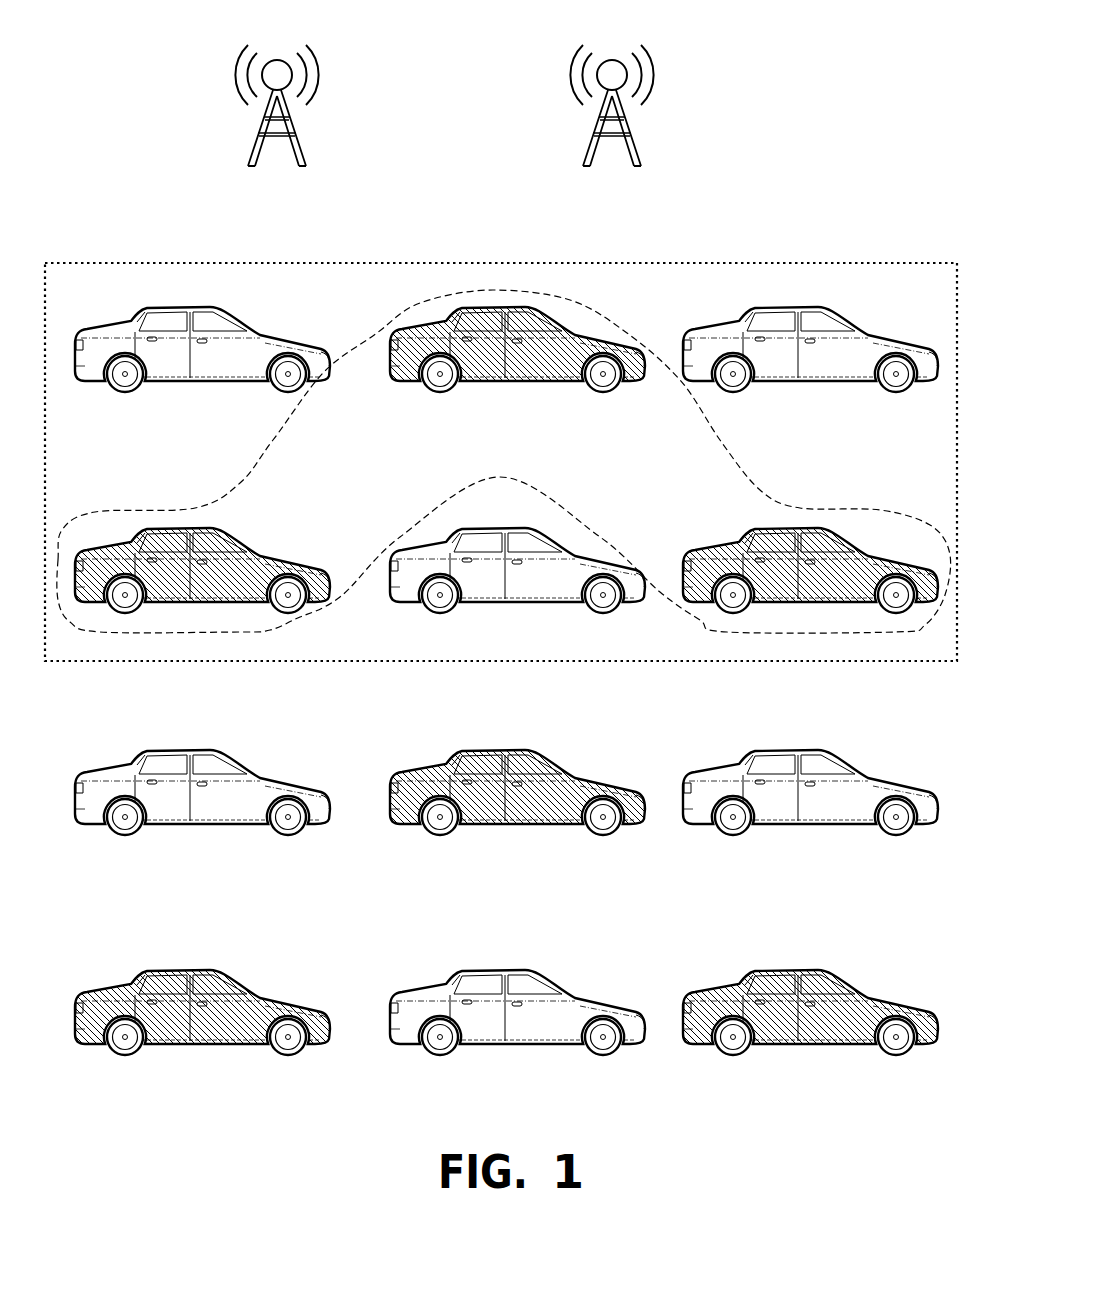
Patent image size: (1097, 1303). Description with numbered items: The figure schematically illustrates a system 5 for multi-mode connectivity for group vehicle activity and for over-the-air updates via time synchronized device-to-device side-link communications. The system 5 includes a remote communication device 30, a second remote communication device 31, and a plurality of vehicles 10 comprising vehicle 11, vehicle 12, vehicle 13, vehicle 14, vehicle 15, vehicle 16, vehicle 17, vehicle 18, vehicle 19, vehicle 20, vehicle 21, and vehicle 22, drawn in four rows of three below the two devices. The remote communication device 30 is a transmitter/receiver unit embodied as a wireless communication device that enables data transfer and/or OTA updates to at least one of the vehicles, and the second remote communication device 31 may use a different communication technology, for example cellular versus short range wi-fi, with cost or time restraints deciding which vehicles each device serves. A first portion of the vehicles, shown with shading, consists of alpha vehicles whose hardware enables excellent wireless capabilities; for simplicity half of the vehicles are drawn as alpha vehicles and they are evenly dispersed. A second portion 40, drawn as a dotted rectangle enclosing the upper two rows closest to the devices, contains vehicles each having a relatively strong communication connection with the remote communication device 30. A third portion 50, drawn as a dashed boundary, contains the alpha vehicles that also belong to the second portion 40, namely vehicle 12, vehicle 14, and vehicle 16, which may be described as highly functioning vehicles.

The system 5 is at (847, 66).
The plurality of vehicles 10 is at (914, 180).
The vehicle 11 is at (165, 307).
The vehicle 12 is at (581, 335).
The vehicle 13 is at (888, 337).
The vehicle 14 is at (165, 529).
The vehicle 15 is at (581, 556).
The vehicle 16 is at (886, 558).
The vehicle 17 is at (165, 750).
The vehicle 18 is at (580, 778).
The vehicle 19 is at (881, 780).
The vehicle 20 is at (165, 970).
The vehicle 21 is at (581, 997).
The vehicle 22 is at (886, 998).
The remote communication device 30 is at (298, 130).
The second remote communication device 31 is at (633, 130).
The second portion 40 is at (802, 262).
The third portion 50 is at (373, 335).